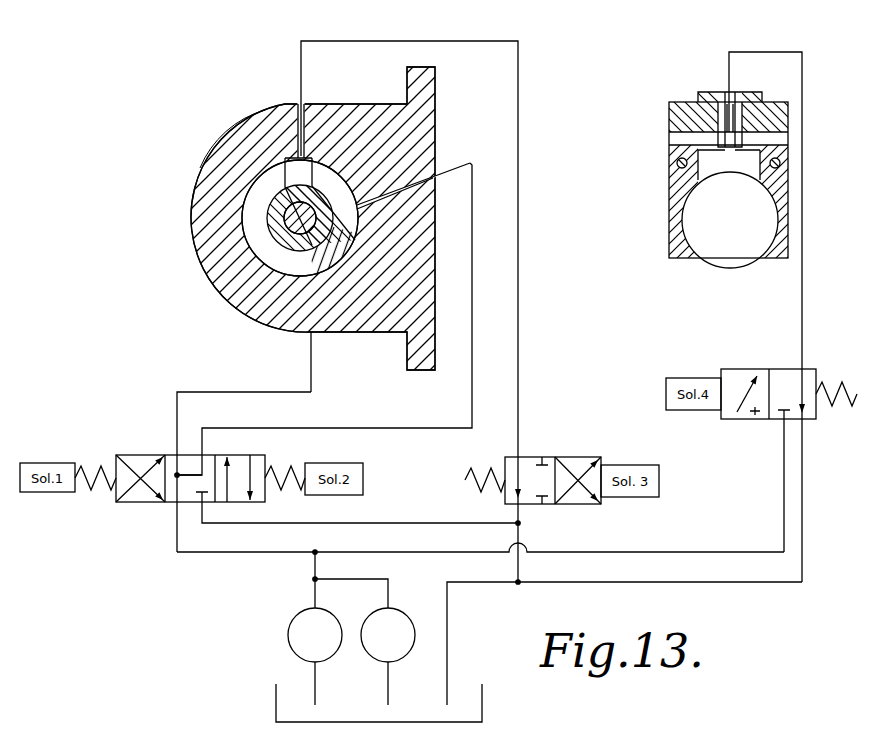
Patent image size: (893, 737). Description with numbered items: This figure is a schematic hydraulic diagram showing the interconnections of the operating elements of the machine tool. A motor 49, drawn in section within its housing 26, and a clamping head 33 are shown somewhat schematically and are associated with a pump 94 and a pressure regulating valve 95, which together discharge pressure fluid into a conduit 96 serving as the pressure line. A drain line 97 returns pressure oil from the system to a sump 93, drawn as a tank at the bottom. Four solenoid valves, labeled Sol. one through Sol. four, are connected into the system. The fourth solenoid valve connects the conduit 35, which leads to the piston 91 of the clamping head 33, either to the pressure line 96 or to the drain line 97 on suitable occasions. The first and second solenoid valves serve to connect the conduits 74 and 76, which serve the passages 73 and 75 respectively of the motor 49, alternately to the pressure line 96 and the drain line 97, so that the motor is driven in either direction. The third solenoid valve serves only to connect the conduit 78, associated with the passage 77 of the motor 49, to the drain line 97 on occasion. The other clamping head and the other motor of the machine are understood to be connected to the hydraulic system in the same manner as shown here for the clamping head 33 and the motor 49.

The housing 26 is at (220, 297).
The clamping head 33 is at (668, 198).
The conduit 35 is at (731, 50).
The motor 49 is at (198, 211).
The passage 73 is at (300, 333).
The conduit 74 is at (313, 378).
The passage 75 is at (417, 188).
The conduit 76 is at (473, 250).
The passage 77 is at (290, 118).
The conduit 78 is at (326, 41).
The piston 91 is at (716, 126).
The sump 93 is at (484, 703).
The pump 94 is at (330, 662).
The pressure regulating valve 95 is at (402, 662).
The conduit 96 is at (249, 553).
The drain line 97 is at (449, 640).